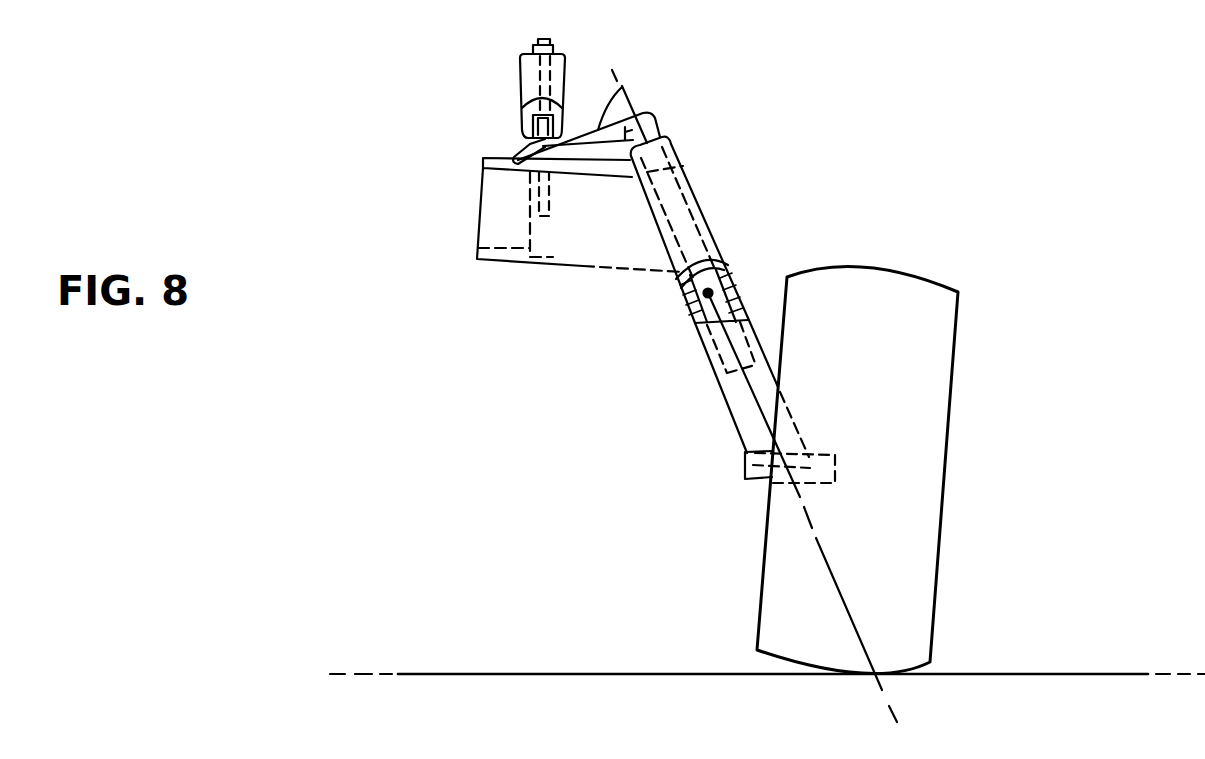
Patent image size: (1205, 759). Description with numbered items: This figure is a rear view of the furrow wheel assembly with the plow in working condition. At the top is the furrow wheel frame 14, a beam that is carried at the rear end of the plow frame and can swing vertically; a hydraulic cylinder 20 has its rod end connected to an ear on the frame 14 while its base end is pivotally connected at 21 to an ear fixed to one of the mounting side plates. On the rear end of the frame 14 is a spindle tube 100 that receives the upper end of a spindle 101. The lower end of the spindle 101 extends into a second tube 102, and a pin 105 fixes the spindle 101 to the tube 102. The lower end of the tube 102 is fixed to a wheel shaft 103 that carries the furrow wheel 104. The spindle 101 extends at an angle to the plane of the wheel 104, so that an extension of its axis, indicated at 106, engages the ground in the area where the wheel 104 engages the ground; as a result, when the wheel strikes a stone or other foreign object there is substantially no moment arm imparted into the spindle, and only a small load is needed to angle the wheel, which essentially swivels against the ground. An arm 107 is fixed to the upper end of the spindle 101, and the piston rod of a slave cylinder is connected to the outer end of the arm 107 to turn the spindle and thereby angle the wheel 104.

The furrow wheel frame 14 is at (572, 245).
The hydraulic cylinder 20 is at (565, 78).
The pivotal base end connection 21 is at (562, 53).
The spindle tube 100 is at (692, 182).
The spindle 101 is at (722, 306).
The second tube 102 is at (733, 387).
The wheel shaft 103 is at (751, 479).
The furrow wheel 104 is at (938, 315).
The pin 105 is at (699, 300).
The spindle axis extension 106 is at (817, 549).
The arm 107 is at (622, 88).